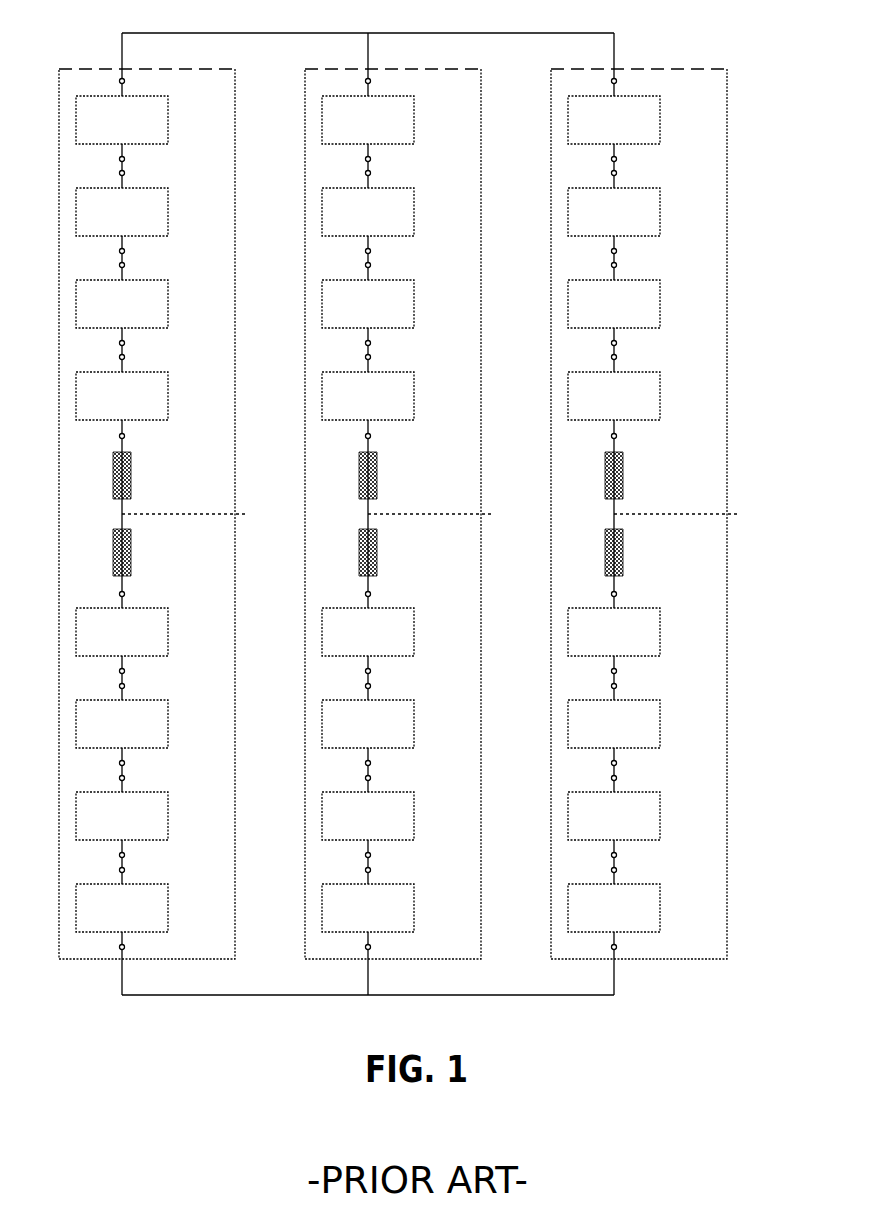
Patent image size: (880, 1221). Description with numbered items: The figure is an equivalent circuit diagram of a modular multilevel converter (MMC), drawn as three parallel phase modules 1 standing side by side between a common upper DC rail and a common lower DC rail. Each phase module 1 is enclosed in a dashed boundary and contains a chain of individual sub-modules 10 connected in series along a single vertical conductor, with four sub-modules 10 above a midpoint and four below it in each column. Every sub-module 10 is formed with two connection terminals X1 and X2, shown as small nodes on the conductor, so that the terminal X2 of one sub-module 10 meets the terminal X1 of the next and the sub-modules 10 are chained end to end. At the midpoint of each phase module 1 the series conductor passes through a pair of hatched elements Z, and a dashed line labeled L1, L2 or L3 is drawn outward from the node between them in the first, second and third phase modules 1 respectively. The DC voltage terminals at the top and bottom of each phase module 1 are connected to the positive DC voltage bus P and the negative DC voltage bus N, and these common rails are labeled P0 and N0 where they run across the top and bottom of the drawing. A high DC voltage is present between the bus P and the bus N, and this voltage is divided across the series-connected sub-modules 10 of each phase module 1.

The phase module 1 is at (412, 514).
The sub-module 10 is at (392, 514).
The impedance element Z is at (383, 514).
The connection terminal X1 is at (346, 560).
The connection terminal X2 is at (388, 469).
The first connection line L1 is at (198, 515).
The second connection line L2 is at (444, 515).
The third connection line L3 is at (690, 515).
The positive DC voltage bus P is at (368, 39).
The negative DC voltage bus N is at (368, 990).
The positive bus P0 is at (240, 33).
The negative bus N0 is at (235, 995).